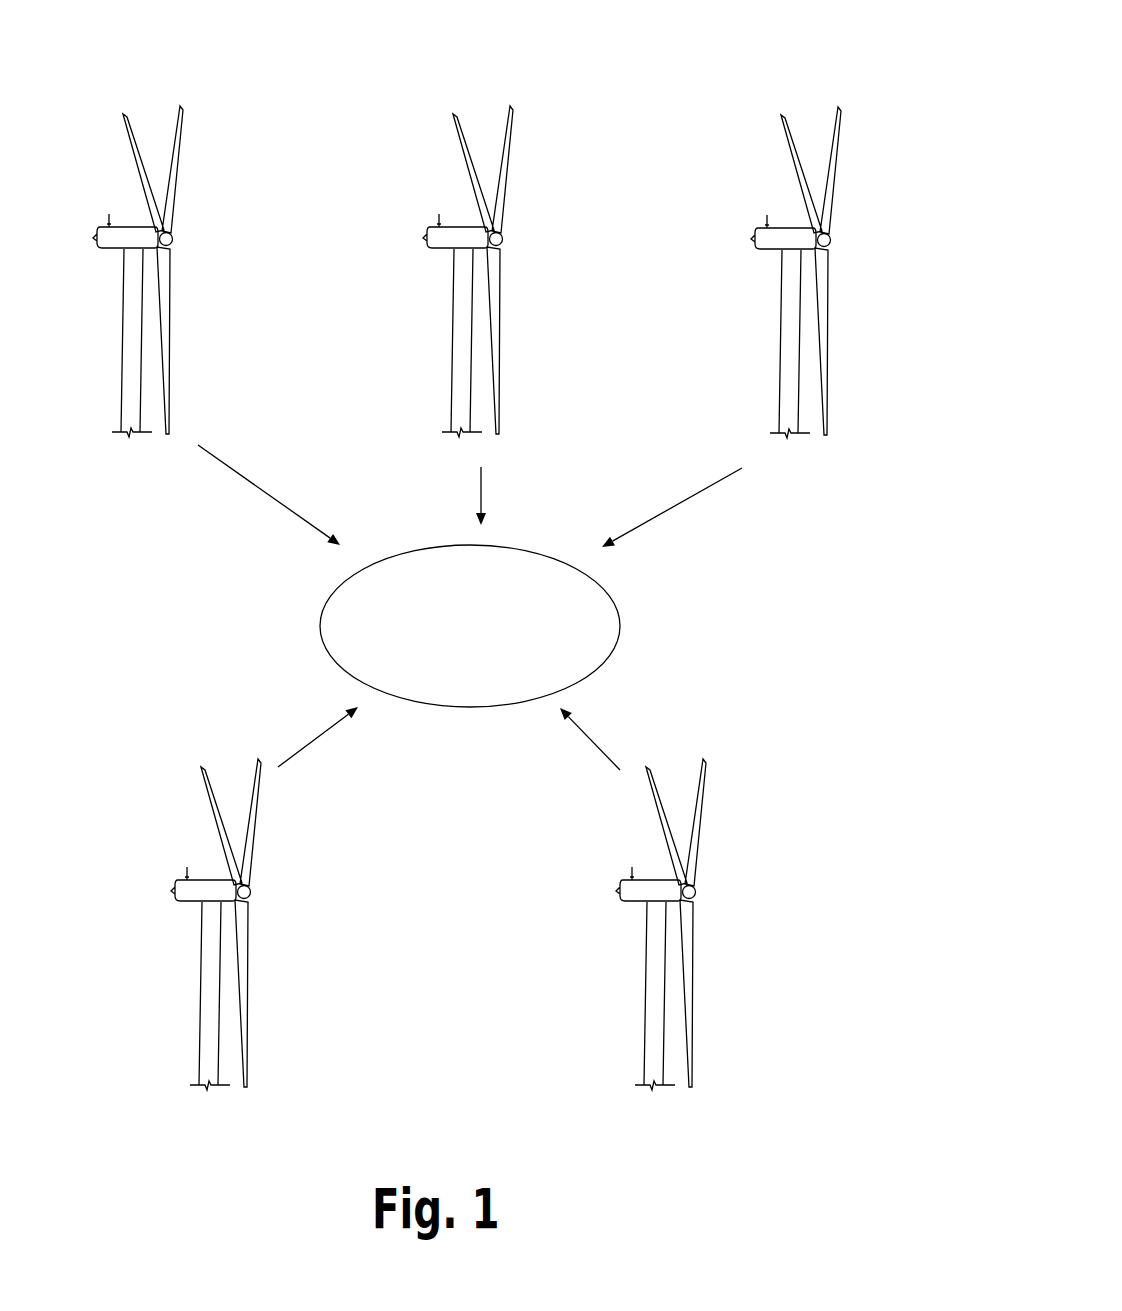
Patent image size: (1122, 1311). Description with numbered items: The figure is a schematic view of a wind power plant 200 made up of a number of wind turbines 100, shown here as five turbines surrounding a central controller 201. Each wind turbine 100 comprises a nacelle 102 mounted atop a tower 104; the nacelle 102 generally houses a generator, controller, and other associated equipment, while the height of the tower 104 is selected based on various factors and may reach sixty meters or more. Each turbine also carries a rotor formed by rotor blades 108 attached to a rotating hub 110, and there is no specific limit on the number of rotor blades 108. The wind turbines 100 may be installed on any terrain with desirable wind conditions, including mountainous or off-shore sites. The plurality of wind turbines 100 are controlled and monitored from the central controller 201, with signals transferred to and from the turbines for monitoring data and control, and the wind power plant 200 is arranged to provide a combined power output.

The wind turbine 100 is at (473, 598).
The nacelle 102 is at (108, 250).
The tower 104 is at (122, 347).
The rotor blades 108 is at (131, 137).
The rotating hub 110 is at (176, 241).
The wind power plant 200 is at (642, 133).
The central controller 201 is at (580, 628).